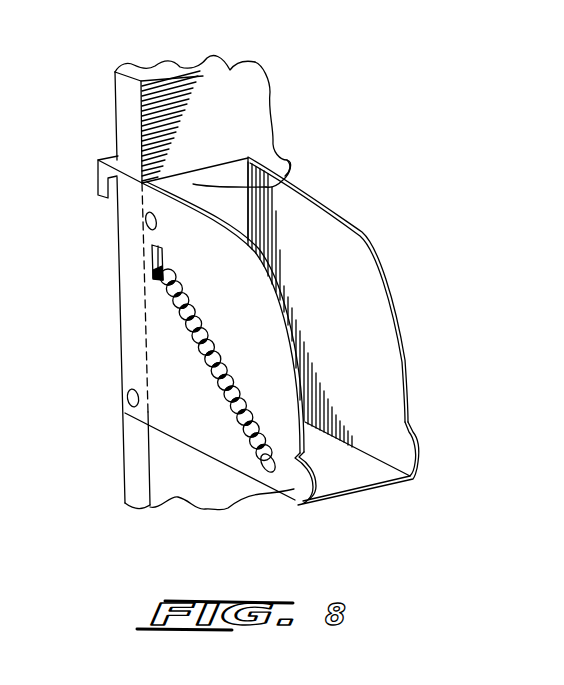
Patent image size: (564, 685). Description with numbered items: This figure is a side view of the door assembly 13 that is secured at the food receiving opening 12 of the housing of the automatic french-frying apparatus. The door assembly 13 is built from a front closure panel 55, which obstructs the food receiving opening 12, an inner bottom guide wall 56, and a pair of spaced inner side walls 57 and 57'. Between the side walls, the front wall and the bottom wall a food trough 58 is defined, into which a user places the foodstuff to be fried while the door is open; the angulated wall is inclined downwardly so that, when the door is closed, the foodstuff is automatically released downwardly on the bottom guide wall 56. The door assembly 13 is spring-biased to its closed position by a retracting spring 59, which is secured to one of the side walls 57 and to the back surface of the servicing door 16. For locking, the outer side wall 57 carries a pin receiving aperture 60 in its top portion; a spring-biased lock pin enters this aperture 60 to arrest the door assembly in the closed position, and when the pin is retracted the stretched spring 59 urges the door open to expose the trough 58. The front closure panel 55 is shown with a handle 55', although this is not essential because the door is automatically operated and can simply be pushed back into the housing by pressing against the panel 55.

The food receiving opening 12 is at (190, 178).
The door assembly 13 is at (157, 313).
The servicing door 16 is at (123, 452).
The front closure panel 55 is at (312, 137).
The handle 55' is at (70, 148).
The inner bottom guide wall 56 is at (330, 483).
The inner side wall 57 is at (351, 316).
The inner side wall 57' is at (355, 304).
The food trough 58 is at (296, 250).
The retracting spring 59 is at (223, 366).
The pin receiving aperture 60 is at (146, 221).